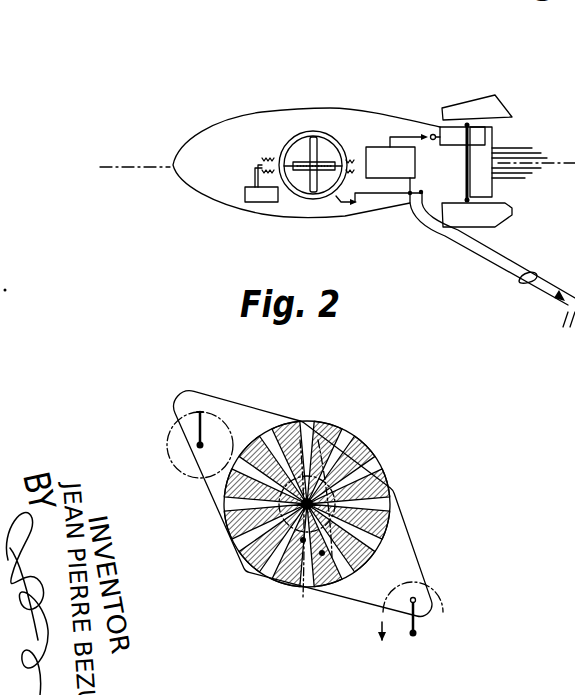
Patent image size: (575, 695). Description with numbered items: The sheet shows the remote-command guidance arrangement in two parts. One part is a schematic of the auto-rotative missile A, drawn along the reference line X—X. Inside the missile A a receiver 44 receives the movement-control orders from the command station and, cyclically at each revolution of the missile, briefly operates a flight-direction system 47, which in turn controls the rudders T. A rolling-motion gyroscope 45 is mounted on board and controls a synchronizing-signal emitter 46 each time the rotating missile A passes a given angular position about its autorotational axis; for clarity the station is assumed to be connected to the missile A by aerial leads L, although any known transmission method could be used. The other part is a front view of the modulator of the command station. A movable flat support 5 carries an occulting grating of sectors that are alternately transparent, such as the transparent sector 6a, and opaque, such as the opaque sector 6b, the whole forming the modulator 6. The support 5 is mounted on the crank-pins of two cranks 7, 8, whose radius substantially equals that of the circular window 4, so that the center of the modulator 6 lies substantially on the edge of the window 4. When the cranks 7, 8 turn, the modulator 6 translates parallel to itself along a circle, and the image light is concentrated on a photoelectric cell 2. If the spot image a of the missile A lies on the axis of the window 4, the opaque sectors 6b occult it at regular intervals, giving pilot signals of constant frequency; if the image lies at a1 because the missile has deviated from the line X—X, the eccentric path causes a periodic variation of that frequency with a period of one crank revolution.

In FIG. 2, the missile A is at (300, 111).
In FIG. 2, the line X— X is at (319, 167).
In FIG. 2, the receiver 44 is at (383, 153).
In FIG. 2, the rolling-motion gyroscope 45 is at (338, 197).
In FIG. 2, the synchronizing-signal emitter 46 is at (252, 200).
In FIG. 2, the flight-direction system 47 is at (447, 132).
In FIG. 2, the rudders T is at (494, 210).
In FIG. 2, the aerial leads L is at (520, 288).
In FIG. 1, the movable flat support 5 is at (245, 413).
In FIG. 1, the crank 7 is at (168, 433).
In FIG. 1, the crank 8 is at (420, 602).
In FIG. 1, the photoelectric cell 2 is at (270, 533).
In FIG. 1, the circular window 4 is at (270, 533).
In FIG. 1, the modulator 6 is at (270, 522).
In FIG. 1, the transparent sector 6a is at (228, 531).
In FIG. 1, the opaque sector 6b is at (246, 560).
In FIG. 1, the spot image of the missile a is at (303, 597).
In FIG. 1, the deviated image of the missile a1 is at (332, 557).